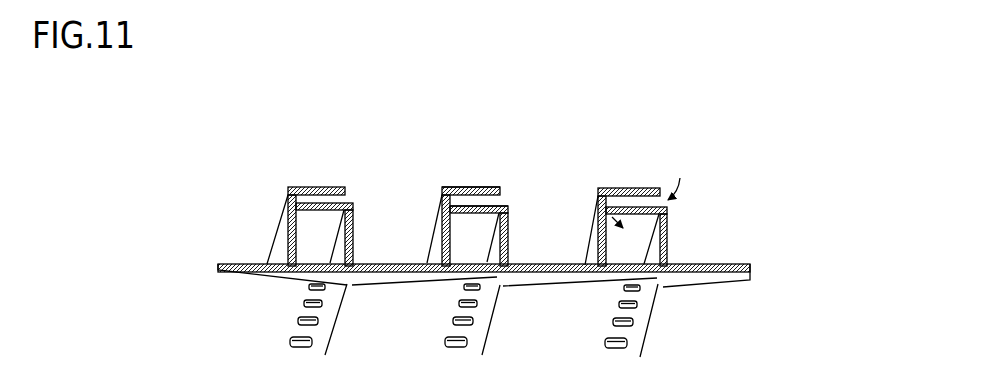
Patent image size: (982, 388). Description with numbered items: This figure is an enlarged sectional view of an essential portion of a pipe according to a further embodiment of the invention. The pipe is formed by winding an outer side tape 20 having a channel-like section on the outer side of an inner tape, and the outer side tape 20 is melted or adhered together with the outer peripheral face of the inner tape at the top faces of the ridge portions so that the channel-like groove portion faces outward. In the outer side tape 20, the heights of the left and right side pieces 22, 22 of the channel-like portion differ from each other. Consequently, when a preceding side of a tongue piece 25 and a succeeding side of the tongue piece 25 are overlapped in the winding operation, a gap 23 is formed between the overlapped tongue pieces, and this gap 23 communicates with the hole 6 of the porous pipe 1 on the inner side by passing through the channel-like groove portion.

The porous pipe 1 is at (697, 268).
The hole 6 is at (460, 280).
The outer side tape 20 is at (305, 182).
The side piece 22 is at (438, 232).
The gap 23 is at (490, 198).
The tongue piece 25 is at (463, 187).